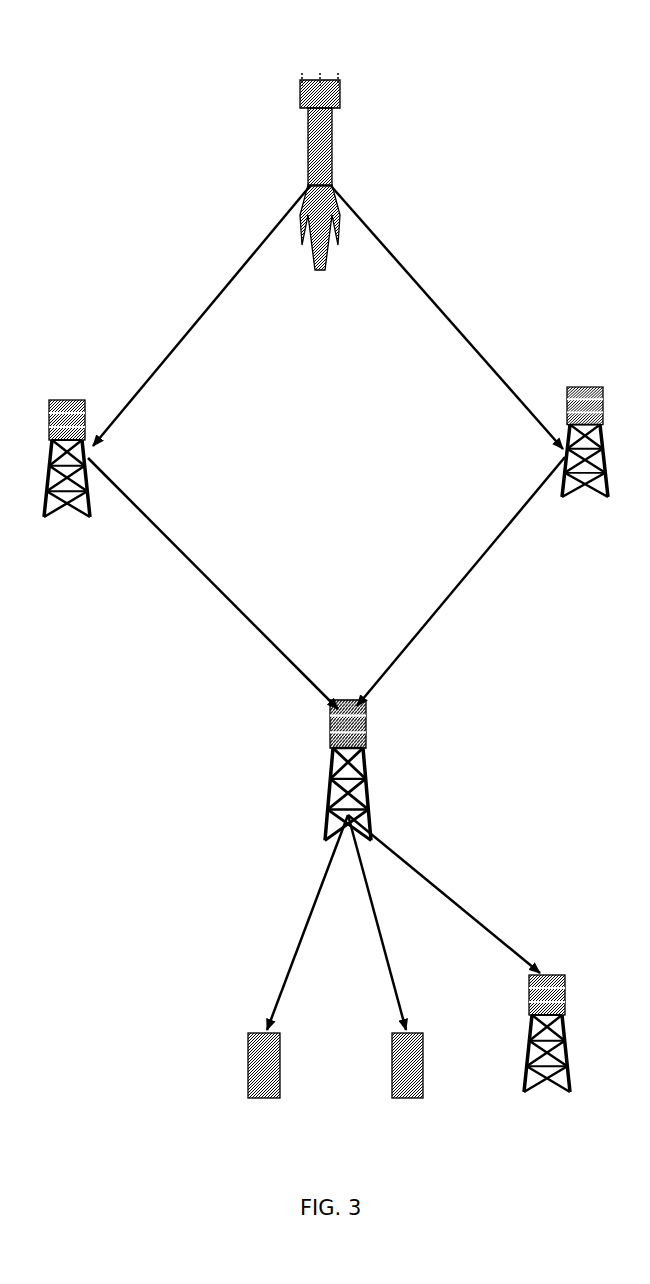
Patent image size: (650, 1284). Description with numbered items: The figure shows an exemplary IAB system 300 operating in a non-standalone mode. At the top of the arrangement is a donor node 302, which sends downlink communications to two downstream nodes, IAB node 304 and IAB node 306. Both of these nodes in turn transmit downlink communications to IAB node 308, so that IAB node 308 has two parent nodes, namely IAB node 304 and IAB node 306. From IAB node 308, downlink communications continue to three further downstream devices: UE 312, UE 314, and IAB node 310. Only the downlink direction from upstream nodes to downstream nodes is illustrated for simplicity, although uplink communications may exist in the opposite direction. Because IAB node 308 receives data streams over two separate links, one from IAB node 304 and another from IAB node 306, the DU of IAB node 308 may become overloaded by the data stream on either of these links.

The IAB system 300 is at (535, 48).
The donor node 302 is at (342, 80).
The IAB node 304 is at (73, 402).
The IAB node 306 is at (593, 385).
The IAB node 308 is at (363, 723).
The IAB node 310 is at (557, 982).
The UE 312 is at (282, 1035).
The UE 314 is at (424, 1035).